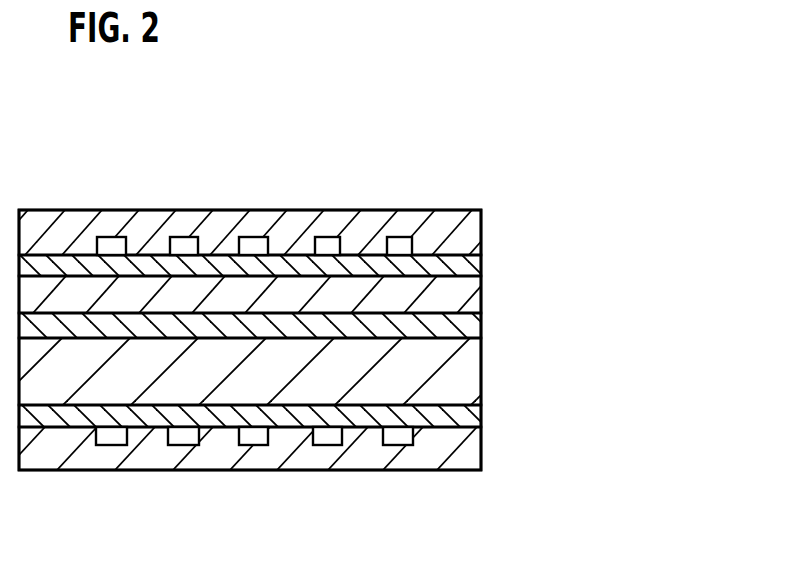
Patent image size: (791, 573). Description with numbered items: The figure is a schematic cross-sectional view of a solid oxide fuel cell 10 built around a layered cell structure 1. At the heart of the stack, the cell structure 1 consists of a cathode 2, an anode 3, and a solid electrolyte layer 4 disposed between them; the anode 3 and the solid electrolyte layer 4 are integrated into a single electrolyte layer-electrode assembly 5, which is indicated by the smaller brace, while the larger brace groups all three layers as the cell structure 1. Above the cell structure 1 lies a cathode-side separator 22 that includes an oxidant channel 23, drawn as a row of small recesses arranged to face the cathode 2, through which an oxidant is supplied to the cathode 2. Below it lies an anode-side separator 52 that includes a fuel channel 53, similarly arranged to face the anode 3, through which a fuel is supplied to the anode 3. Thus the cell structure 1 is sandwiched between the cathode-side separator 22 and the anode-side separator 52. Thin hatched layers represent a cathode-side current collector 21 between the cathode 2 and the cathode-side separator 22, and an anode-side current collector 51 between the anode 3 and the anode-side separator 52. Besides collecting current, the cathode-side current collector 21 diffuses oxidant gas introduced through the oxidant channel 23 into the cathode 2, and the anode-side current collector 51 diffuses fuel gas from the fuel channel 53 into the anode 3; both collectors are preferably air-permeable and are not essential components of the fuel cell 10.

The fuel cell 10 is at (338, 321).
The cell structure 1 is at (345, 331).
The cathode 2 is at (461, 288).
The anode 3 is at (283, 375).
The solid electrolyte layer 4 is at (463, 325).
The electrolyte layer-electrode assembly 5 is at (309, 359).
The cathode-side current collector 21 is at (331, 268).
The cathode-side separator 22 is at (467, 232).
The oxidant channel 23 is at (186, 245).
The anode-side current collector 51 is at (85, 414).
The anode-side separator 52 is at (467, 453).
The fuel channel 53 is at (255, 435).